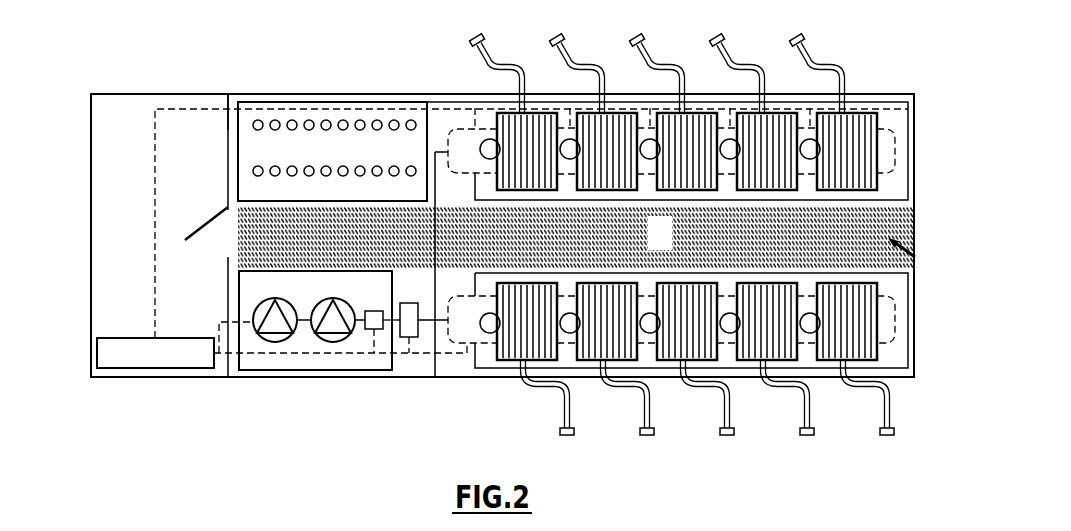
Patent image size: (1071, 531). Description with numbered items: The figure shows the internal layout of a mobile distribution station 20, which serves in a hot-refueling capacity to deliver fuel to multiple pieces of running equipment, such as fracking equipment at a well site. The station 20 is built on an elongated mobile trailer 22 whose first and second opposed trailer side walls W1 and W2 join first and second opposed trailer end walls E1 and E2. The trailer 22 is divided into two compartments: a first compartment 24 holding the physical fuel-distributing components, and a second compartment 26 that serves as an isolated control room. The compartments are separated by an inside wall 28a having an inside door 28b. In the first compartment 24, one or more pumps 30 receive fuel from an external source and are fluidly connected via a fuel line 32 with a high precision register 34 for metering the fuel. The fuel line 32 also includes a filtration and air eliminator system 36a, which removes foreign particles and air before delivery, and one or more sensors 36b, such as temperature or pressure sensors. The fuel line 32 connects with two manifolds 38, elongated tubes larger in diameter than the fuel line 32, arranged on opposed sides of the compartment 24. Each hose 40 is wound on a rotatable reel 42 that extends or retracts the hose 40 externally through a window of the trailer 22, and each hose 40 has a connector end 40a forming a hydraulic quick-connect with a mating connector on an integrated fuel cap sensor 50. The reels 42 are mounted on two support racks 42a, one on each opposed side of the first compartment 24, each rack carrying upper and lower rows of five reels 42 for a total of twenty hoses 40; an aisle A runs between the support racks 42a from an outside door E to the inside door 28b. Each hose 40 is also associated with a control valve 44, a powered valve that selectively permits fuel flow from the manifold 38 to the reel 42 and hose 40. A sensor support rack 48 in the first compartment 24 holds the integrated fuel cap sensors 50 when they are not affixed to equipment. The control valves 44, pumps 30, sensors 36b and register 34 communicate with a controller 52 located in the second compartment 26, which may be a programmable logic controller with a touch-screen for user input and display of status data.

The mobile distribution station 20 is at (221, 414).
The mobile trailer 22 is at (395, 82).
The first compartment 24 is at (915, 258).
The second compartment 26 is at (114, 239).
The inside wall 28a is at (226, 116).
The inside door 28b is at (215, 213).
The pumps 30 is at (319, 355).
The fuel line 32 is at (434, 380).
The high precision register 34 is at (412, 355).
The filtration and air eliminator system 36a is at (369, 330).
The sensors 36b is at (390, 309).
The manifolds 38 is at (452, 128).
The hose 40 is at (508, 64).
The connector end 40a is at (637, 31).
The reel 42 is at (534, 113).
The support rack 42a is at (858, 102).
The control valve 44 is at (490, 138).
The sensor support rack 48 is at (301, 102).
The integrated fuel cap sensors 50 is at (360, 120).
The controller 52 is at (135, 368).
The first trailer side wall W1 is at (253, 93).
The second trailer side wall W2 is at (260, 378).
The outside door E is at (914, 224).
The first trailer end wall E1 is at (915, 95).
The second trailer end wall E2 is at (91, 118).
The aisle A is at (669, 247).